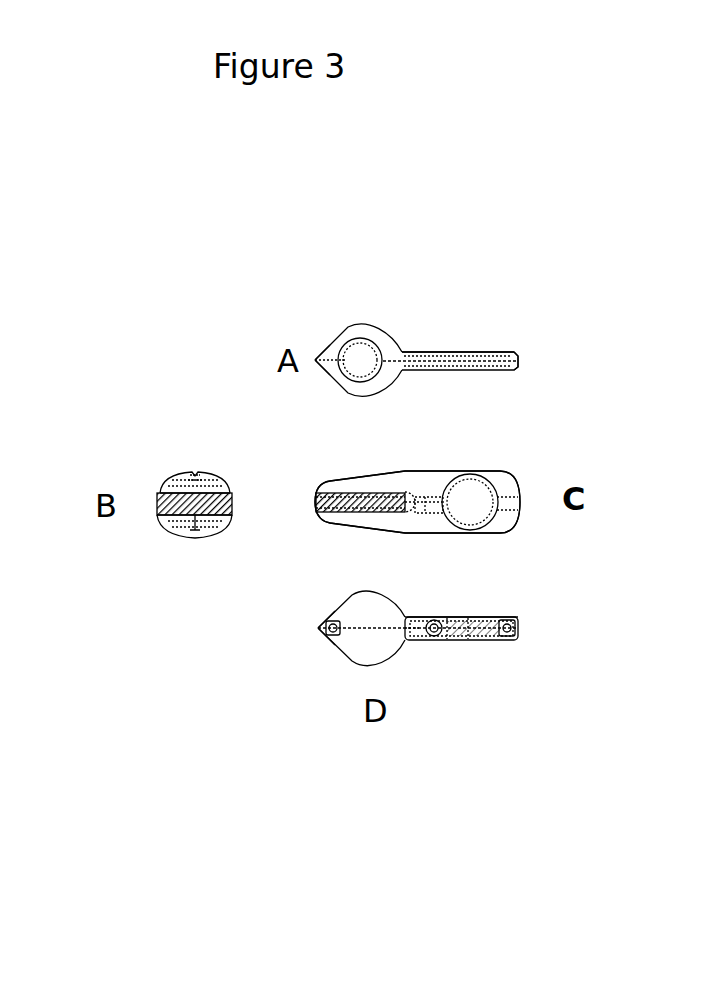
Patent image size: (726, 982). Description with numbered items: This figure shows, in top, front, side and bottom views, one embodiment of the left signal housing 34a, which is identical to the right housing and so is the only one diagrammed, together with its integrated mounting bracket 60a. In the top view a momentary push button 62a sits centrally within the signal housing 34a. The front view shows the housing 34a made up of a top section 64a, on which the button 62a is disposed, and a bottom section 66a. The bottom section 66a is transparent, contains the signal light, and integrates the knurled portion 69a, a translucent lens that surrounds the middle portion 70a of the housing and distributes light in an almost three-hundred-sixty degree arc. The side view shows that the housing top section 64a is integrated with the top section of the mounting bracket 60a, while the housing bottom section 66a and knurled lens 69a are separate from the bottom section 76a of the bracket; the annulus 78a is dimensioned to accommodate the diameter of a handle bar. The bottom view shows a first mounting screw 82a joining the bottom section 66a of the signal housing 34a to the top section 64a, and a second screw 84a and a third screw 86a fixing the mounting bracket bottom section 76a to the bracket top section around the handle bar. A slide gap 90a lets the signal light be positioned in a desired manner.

In FIG. 3A, the left signal housing 34a is at (405, 323).
In FIG. 3B, the left signal housing 34a is at (223, 453).
In FIG. 3C, the left signal housing 34a is at (492, 453).
In FIG. 3D, the left signal housing 34a is at (503, 663).
In FIG. 3A, the mounting bracket 60a is at (497, 347).
In FIG. 3B, the mounting bracket 60a is at (197, 473).
In FIG. 3C, the mounting bracket 60a is at (379, 502).
In FIG. 3A, the momentary push button 62a is at (361, 357).
In FIG. 3B, the momentary push button 62a is at (188, 478).
In FIG. 3C, the momentary push button 62a is at (362, 478).
In FIG. 3A, the top section 64a is at (347, 331).
In FIG. 3B, the top section 64a is at (158, 490).
In FIG. 3C, the top section 64a is at (385, 480).
In FIG. 3C, the bottom section 66a is at (418, 528).
In FIG. 3D, the bottom section 66a is at (465, 617).
In FIG. 3A, the knurled portion 69a is at (322, 372).
In FIG. 3B, the knurled portion 69a is at (157, 505).
In FIG. 3C, the knurled portion 69a is at (318, 497).
In FIG. 3D, the knurled portion 69a is at (362, 667).
In FIG. 3A, the middle portion 70a is at (515, 350).
In FIG. 3C, the middle portion 70a is at (428, 483).
In FIG. 3C, the bottom section of mounting bracket 76a is at (508, 522).
In FIG. 3C, the annulus 78a is at (478, 488).
In FIG. 3D, the first mounting screw 82a is at (323, 634).
In FIG. 3D, the second screw 84a is at (436, 640).
In FIG. 3D, the third screw 86a is at (518, 629).
In FIG. 3D, the slide gap 90a is at (408, 640).